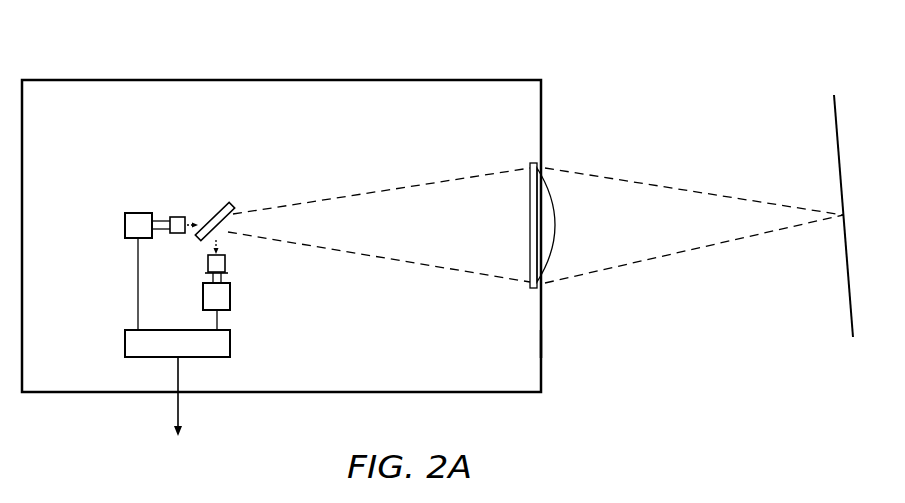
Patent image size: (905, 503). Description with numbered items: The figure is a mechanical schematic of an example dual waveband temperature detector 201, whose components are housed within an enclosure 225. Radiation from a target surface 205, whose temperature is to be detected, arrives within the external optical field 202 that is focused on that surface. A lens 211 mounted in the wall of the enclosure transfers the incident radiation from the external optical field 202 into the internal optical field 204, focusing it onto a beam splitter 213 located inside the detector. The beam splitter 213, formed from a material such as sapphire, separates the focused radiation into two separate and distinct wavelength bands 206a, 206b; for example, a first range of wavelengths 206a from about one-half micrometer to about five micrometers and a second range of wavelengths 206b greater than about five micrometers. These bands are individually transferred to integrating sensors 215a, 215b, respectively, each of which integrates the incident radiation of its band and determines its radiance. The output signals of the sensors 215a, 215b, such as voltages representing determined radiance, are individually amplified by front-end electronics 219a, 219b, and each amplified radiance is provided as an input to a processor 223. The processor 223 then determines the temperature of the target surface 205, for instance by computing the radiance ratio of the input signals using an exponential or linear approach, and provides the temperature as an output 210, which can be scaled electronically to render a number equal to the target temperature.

The dual waveband temperature detector 201 is at (281, 208).
The external optical field 202 is at (695, 164).
The internal optical field 204 is at (353, 168).
The target surface 205 is at (846, 277).
The first wavelength band 206a is at (203, 206).
The second wavelength band 206b is at (236, 251).
The output 210 is at (178, 406).
The lens 211 is at (513, 145).
The beam splitter 213 is at (226, 211).
The integrating sensor 215a is at (178, 217).
The integrating sensor 215b is at (208, 263).
The front-end electronics 219a is at (125, 225).
The front-end electronics 219b is at (230, 297).
The processor 223 is at (125, 344).
The enclosure 225 is at (553, 345).